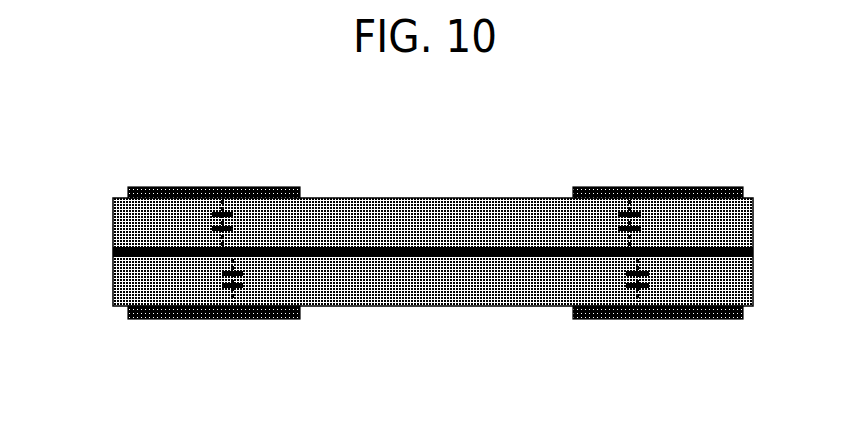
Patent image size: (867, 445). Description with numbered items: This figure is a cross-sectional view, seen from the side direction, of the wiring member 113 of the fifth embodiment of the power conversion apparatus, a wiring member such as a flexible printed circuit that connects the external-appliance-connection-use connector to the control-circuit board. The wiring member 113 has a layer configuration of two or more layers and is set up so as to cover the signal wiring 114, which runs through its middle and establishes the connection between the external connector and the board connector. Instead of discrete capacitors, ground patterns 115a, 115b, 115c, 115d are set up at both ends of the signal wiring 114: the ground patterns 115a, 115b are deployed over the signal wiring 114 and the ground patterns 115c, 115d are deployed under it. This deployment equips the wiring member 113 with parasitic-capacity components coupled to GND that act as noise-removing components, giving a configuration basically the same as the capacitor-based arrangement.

The wiring member 113 is at (452, 307).
The signal wiring 114 is at (405, 248).
The ground pattern 115a is at (130, 190).
The ground pattern 115b is at (707, 189).
The ground pattern 115c is at (198, 318).
The ground pattern 115d is at (722, 318).